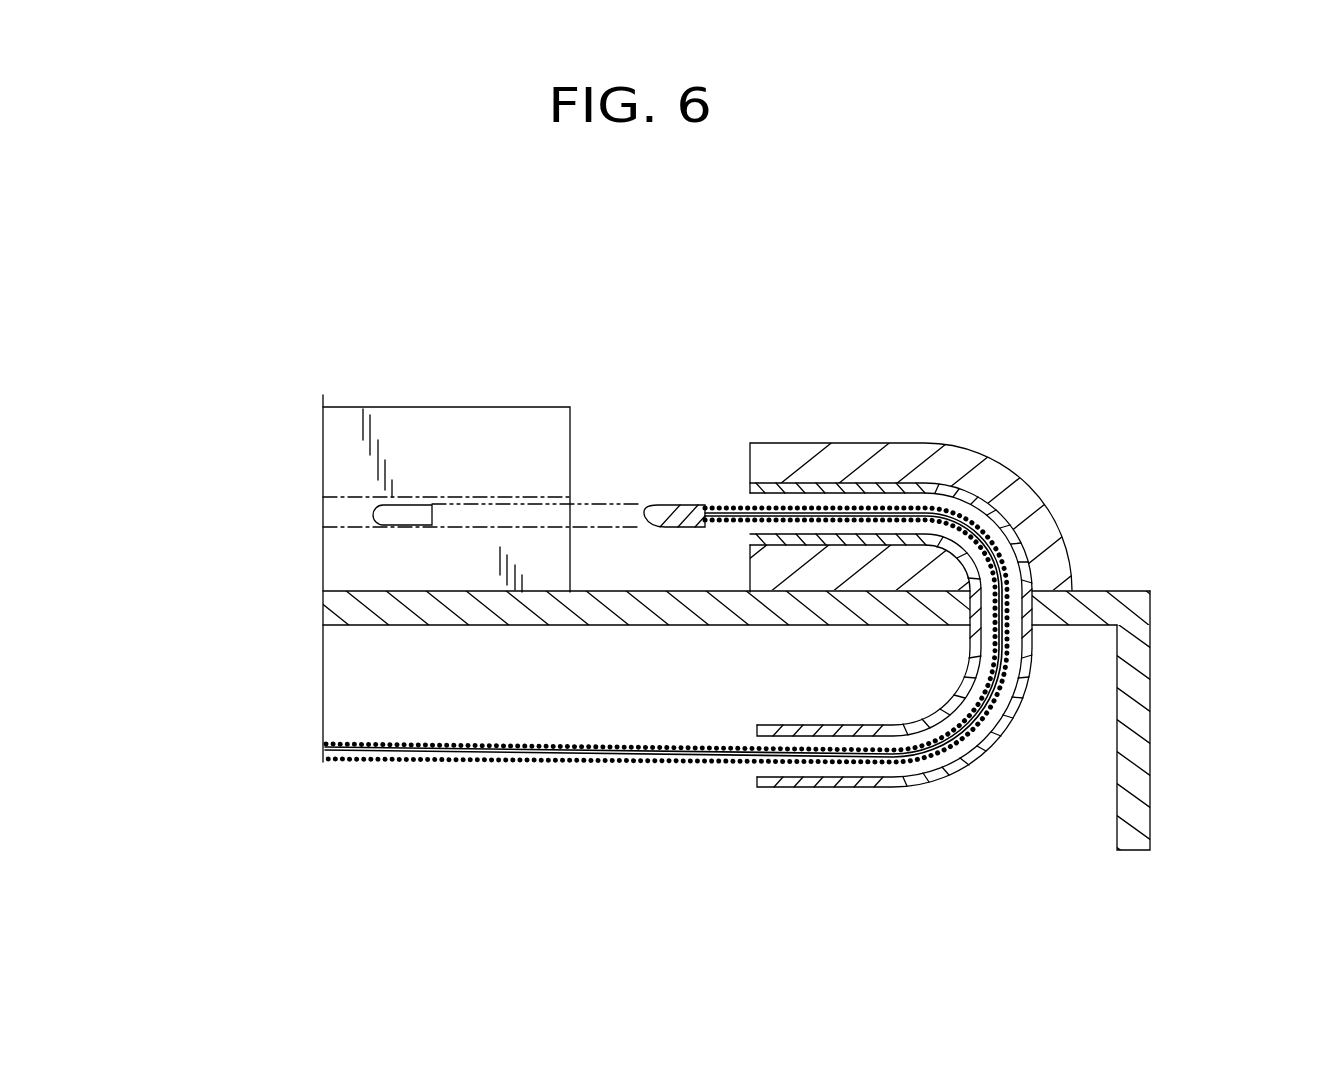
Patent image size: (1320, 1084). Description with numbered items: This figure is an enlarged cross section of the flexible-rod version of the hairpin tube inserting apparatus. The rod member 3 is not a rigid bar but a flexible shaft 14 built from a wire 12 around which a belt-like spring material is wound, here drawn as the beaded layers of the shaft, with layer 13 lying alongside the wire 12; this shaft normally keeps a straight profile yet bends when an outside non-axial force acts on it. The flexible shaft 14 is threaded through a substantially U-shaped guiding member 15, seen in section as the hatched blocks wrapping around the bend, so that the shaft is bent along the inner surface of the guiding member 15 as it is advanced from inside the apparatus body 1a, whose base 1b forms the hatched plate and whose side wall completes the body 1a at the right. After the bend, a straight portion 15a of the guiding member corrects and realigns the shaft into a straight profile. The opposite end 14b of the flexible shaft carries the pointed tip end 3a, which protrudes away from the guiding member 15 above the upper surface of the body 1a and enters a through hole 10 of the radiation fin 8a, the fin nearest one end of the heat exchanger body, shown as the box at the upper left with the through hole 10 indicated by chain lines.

The body 1a is at (1156, 695).
The base 1b is at (362, 591).
The rod member 3 is at (666, 696).
The pointed tip end 3a is at (686, 505).
The radiation fin 8a is at (540, 407).
The through hole 10 is at (548, 497).
The wire 12 is at (527, 763).
The second layer 13 is at (600, 762).
The flexible shaft 14 is at (473, 762).
The opposite end 14b is at (723, 497).
The guiding member 15 is at (1030, 550).
The straight portion 15a is at (833, 487).